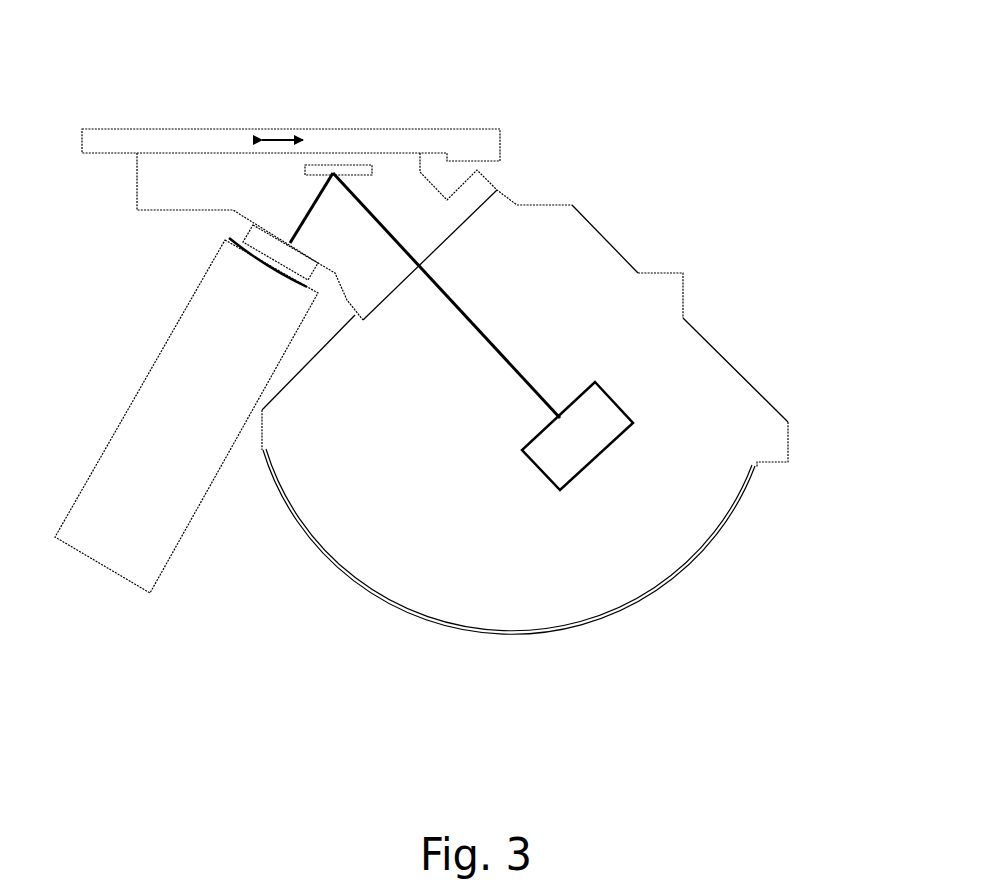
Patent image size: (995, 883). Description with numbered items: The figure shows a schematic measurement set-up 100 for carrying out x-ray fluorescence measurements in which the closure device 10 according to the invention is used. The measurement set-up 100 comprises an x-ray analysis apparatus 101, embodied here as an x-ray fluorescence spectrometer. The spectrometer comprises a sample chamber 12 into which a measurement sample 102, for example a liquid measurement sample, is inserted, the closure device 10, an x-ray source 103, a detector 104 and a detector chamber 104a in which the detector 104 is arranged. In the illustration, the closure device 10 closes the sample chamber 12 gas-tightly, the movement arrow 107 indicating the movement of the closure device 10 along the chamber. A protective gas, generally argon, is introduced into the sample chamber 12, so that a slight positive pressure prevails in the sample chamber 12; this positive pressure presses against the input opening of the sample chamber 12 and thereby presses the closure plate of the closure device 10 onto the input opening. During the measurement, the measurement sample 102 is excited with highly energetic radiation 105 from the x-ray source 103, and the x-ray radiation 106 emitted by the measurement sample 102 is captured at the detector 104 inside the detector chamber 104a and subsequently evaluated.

The closure device 10 is at (433, 138).
The sample chamber 12 is at (167, 178).
The measurement set-up 100 is at (652, 105).
The x-ray analysis apparatus 101 is at (245, 636).
The measurement sample 102 is at (345, 163).
The x-ray source 103 is at (117, 553).
The detector 104 is at (573, 450).
The detector chamber 104a is at (487, 612).
The highly energetic radiation 105 is at (316, 218).
The x-ray radiation 106 is at (490, 327).
The movement arrow 107 is at (280, 140).